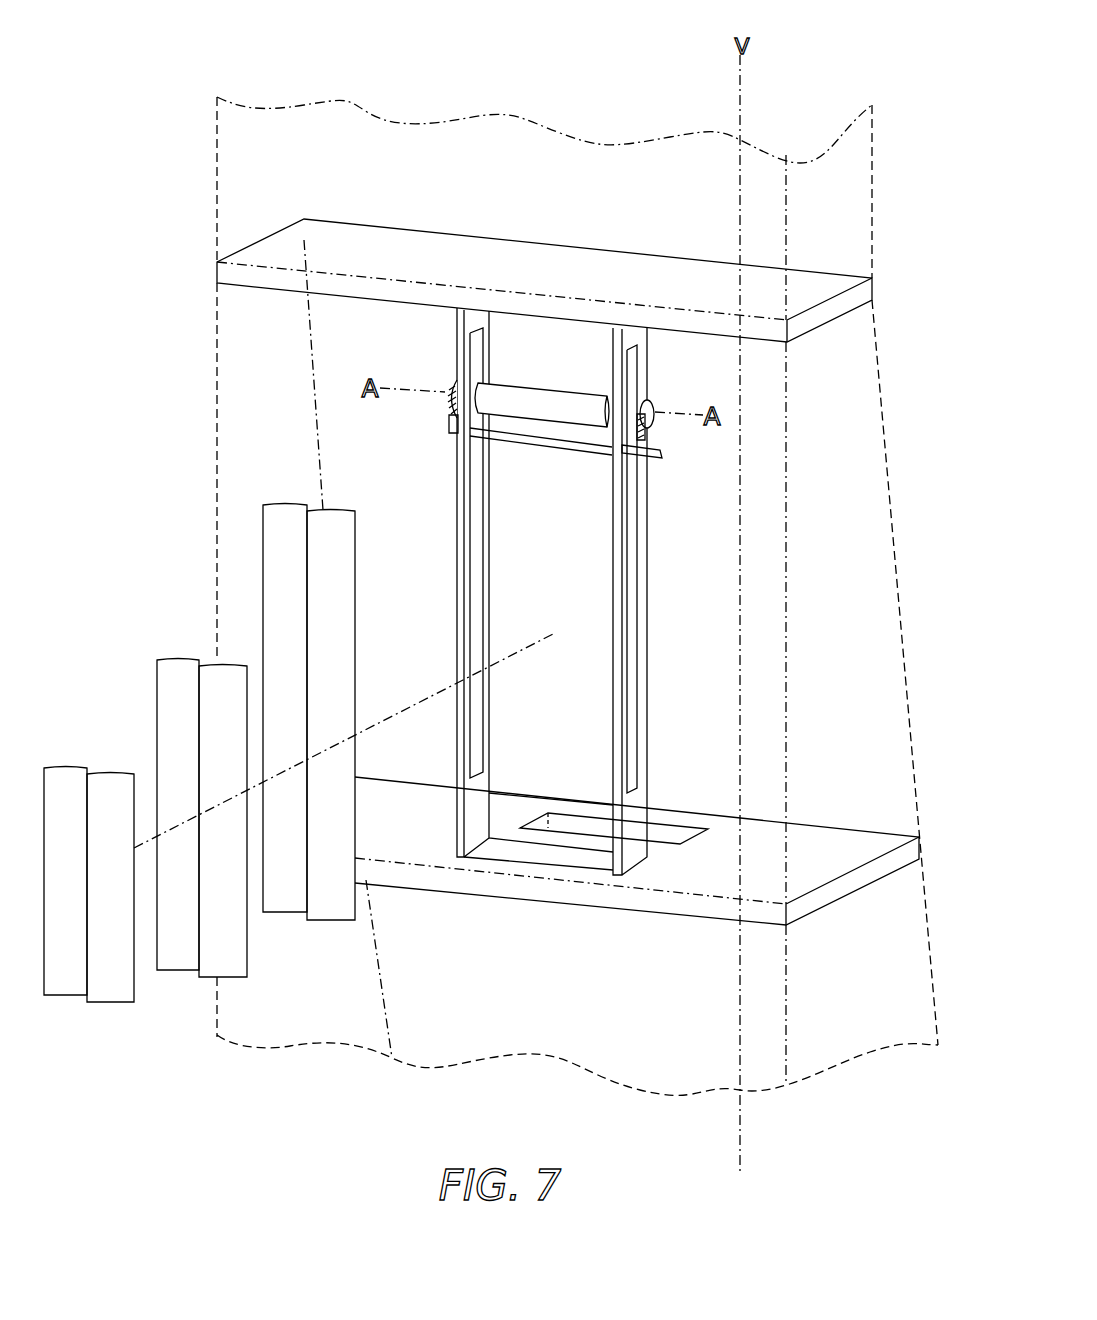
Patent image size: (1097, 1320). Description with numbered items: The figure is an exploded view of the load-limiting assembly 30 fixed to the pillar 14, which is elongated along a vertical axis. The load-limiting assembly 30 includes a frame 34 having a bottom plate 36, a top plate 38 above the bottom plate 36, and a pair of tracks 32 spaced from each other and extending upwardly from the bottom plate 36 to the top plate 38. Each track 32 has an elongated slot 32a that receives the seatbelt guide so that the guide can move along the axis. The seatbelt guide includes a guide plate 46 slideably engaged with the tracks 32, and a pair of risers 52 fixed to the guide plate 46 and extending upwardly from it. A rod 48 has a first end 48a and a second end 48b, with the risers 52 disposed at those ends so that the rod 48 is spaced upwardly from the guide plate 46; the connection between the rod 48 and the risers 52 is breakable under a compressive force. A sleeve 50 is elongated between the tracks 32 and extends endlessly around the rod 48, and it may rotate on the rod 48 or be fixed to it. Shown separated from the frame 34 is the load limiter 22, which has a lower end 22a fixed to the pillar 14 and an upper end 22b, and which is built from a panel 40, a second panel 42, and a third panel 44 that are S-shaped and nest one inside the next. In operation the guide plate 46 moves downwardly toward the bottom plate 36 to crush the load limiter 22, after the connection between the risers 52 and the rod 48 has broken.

The pillar 14 is at (873, 187).
The load limiter 22 is at (250, 805).
The lower end 22a is at (340, 903).
The upper end 22b is at (288, 521).
The load-limiting assembly 30 is at (855, 477).
The track 32 is at (551, 591).
The elongated slot 32a is at (477, 538).
The frame 34 is at (427, 176).
The bottom plate 36 is at (653, 912).
The top plate 38 is at (609, 249).
The panel 40 is at (296, 713).
The second panel 42 is at (157, 693).
The third panel 44 is at (72, 997).
The guide plate 46 is at (650, 457).
The rod 48 is at (532, 374).
The first end 48a is at (662, 403).
The second end 48b is at (440, 380).
The sleeve 50 is at (561, 386).
The riser 52 is at (449, 420).